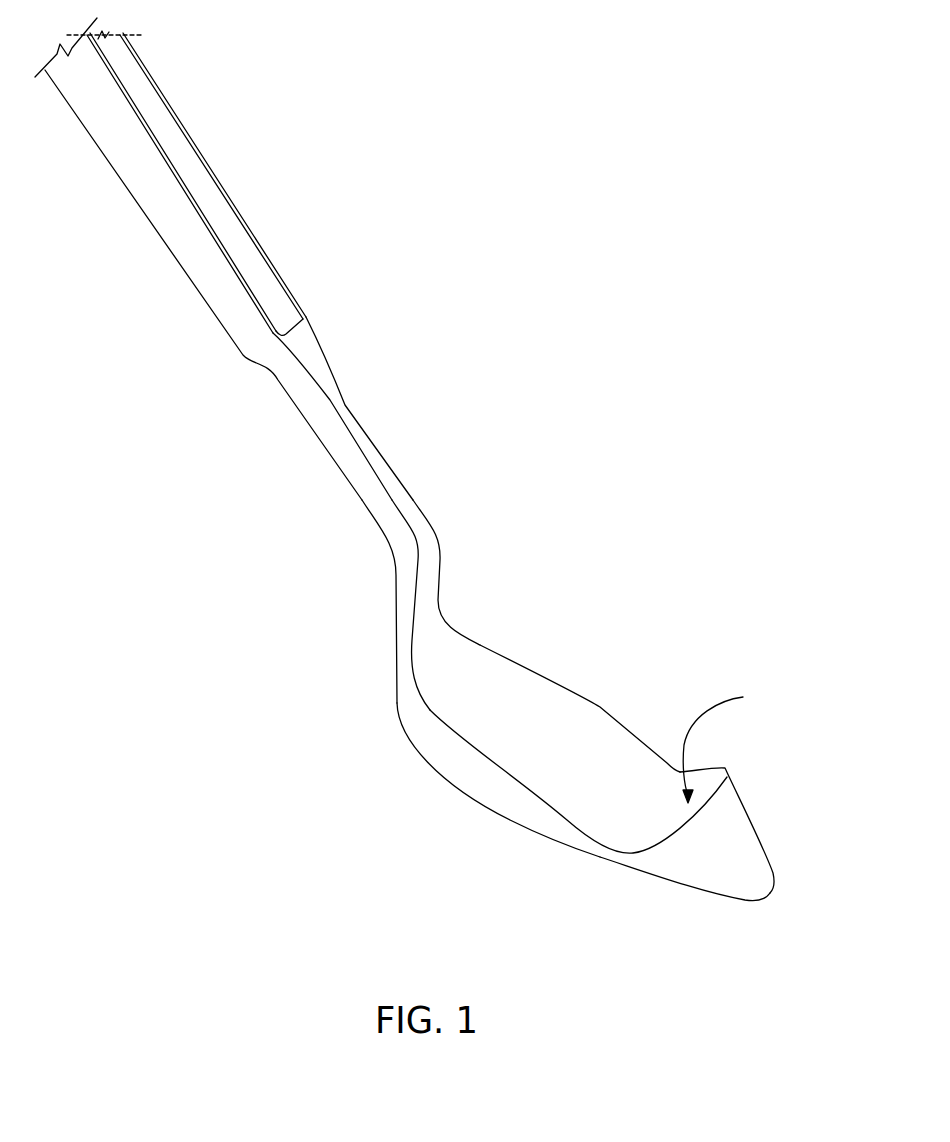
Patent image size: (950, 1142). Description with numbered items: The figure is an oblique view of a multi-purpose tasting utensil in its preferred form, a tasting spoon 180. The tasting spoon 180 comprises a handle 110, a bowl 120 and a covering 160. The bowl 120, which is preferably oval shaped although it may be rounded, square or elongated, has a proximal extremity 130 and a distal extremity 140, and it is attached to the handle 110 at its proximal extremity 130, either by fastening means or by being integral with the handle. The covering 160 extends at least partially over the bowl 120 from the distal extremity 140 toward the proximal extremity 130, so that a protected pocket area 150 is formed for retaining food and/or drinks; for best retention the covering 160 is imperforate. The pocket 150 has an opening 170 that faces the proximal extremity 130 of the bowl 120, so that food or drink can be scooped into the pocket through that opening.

The handle 110 is at (300, 338).
The bowl 120 is at (463, 720).
The proximal extremity 130 is at (428, 590).
The distal extremity 140 is at (777, 877).
The protected pocket area 150 is at (690, 835).
The covering 160 is at (720, 838).
The opening 170 is at (735, 744).
The tasting spoon 180 is at (128, 807).